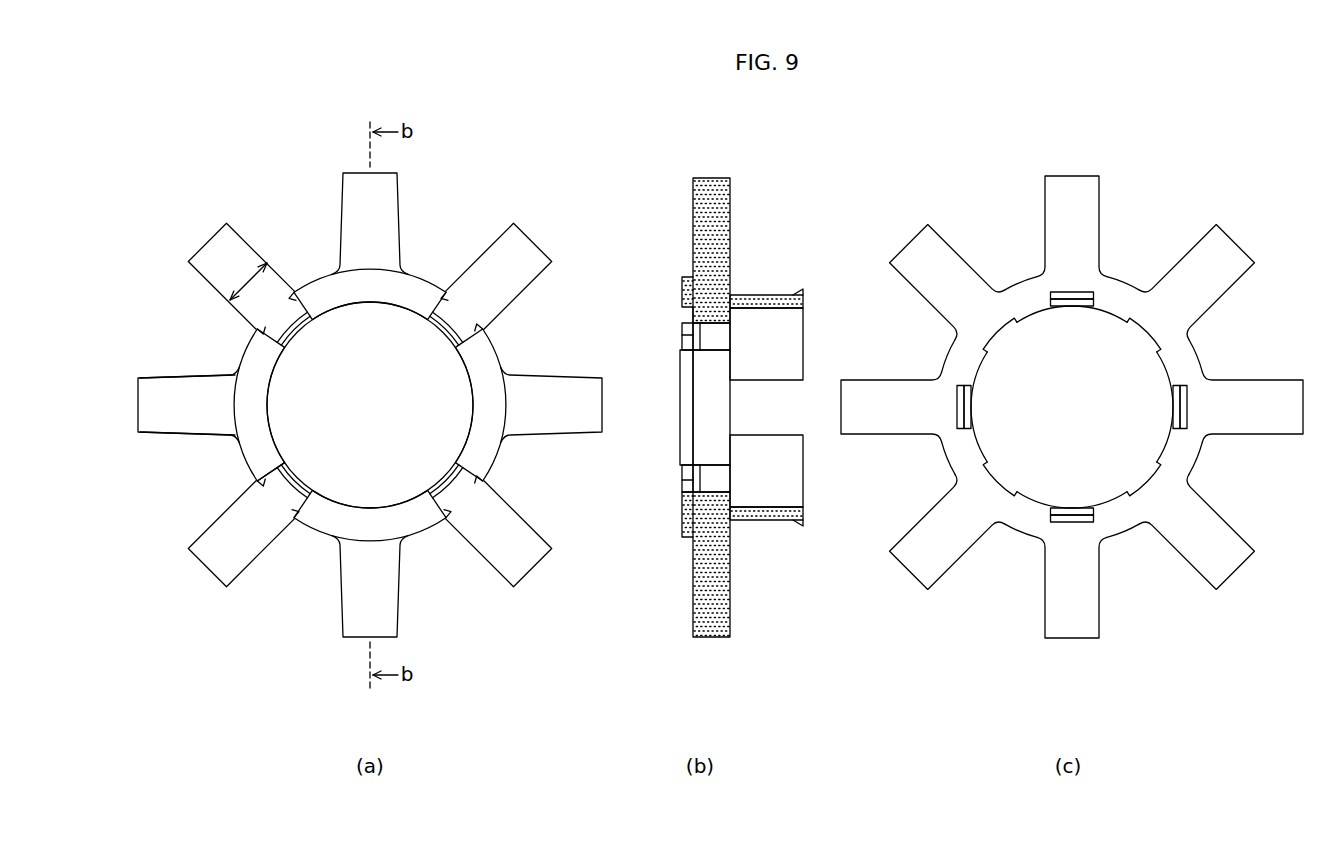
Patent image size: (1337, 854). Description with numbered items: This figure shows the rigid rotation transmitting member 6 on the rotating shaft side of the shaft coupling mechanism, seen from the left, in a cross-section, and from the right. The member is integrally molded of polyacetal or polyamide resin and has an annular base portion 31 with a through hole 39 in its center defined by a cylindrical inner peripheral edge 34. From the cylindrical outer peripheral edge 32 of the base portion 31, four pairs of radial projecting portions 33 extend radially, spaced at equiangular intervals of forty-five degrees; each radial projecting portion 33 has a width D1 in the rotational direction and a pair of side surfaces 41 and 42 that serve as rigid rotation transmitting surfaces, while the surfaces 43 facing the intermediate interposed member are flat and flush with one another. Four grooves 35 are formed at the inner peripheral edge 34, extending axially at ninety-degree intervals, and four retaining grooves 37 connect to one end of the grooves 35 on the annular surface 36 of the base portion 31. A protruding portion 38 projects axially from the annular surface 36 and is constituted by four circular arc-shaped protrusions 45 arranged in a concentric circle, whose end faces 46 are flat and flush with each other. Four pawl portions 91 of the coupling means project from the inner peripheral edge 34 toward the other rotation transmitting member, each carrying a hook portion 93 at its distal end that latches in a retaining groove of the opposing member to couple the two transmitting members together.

The rotation transmitting member 6 is at (221, 590).
The annular base portion 31 is at (267, 287).
The cylindrical outer peripheral edge 32 is at (413, 538).
The radial projecting portion 33 is at (222, 236).
The cylindrical inner peripheral edge 34 is at (393, 307).
The groove 35 is at (296, 330).
The annular surface 36 is at (267, 495).
The retaining groove 37 is at (296, 290).
The protruding portion 38 is at (243, 461).
The through hole 39 is at (430, 388).
The side surface 41 is at (239, 226).
The side surface 42 is at (203, 277).
The surface 43 is at (732, 208).
The circular arc-shaped protrusion 45 is at (378, 283).
The end face 46 is at (332, 292).
The pawl portion 91 is at (760, 300).
The hook portion 93 is at (800, 293).
The width D1 is at (228, 258).